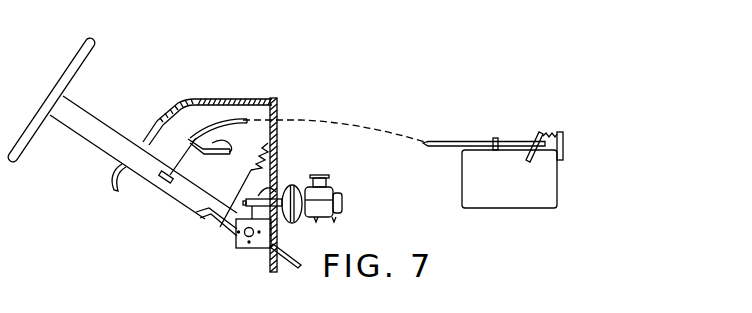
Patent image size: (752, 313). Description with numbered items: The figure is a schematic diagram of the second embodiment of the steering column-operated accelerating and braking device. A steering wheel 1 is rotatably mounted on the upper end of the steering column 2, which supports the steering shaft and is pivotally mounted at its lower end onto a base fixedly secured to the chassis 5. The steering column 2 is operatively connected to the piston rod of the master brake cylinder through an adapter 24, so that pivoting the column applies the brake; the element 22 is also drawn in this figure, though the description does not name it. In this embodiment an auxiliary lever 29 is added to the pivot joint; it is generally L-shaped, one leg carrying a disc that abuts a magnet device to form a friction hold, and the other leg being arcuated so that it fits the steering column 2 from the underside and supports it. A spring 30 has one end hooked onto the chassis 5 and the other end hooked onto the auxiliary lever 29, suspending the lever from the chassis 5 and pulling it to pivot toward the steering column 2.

The steering wheel 1 is at (74, 74).
The steering column 2 is at (97, 119).
The chassis 5 is at (279, 132).
The lever arm 22 is at (266, 143).
The adapter 24 is at (268, 188).
The auxiliary lever 29 is at (203, 213).
The spring 30 is at (241, 178).